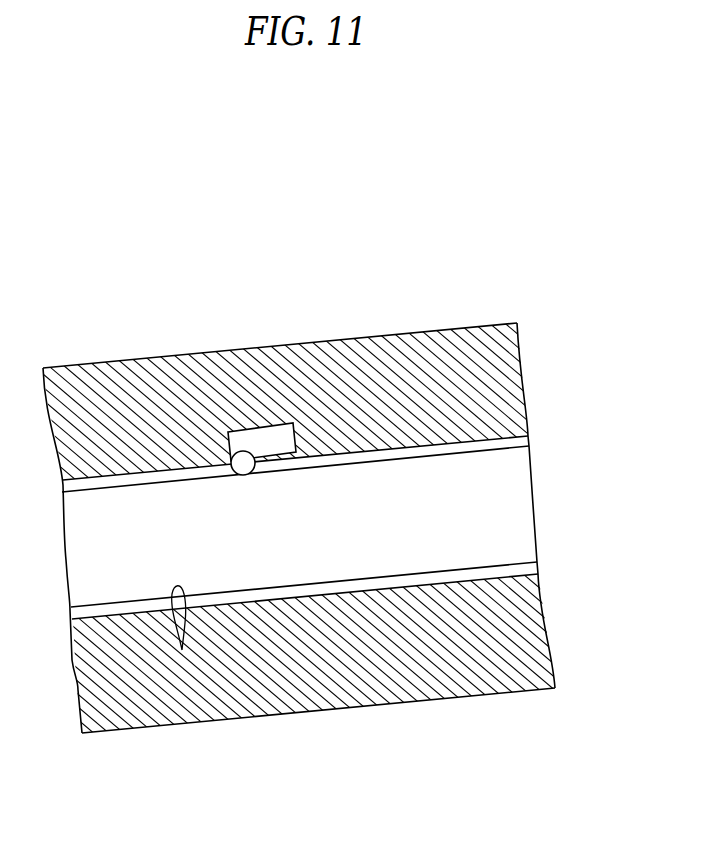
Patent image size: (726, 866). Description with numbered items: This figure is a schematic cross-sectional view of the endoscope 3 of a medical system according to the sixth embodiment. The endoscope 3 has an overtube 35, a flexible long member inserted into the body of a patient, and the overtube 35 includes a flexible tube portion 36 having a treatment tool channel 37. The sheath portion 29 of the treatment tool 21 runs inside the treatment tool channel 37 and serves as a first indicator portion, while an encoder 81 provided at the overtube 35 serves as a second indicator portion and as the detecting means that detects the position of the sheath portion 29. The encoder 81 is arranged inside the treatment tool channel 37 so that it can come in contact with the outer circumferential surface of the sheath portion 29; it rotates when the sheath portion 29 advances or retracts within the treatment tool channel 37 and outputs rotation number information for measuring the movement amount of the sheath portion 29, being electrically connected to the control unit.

The endoscope 3 is at (412, 206).
The overtube 35 is at (460, 322).
The flexible tube portion 36 is at (312, 665).
The sheath portion 29 is at (299, 629).
The treatment tool 21 is at (404, 547).
The encoder 81 is at (256, 445).
The treatment tool channel 37 is at (182, 650).